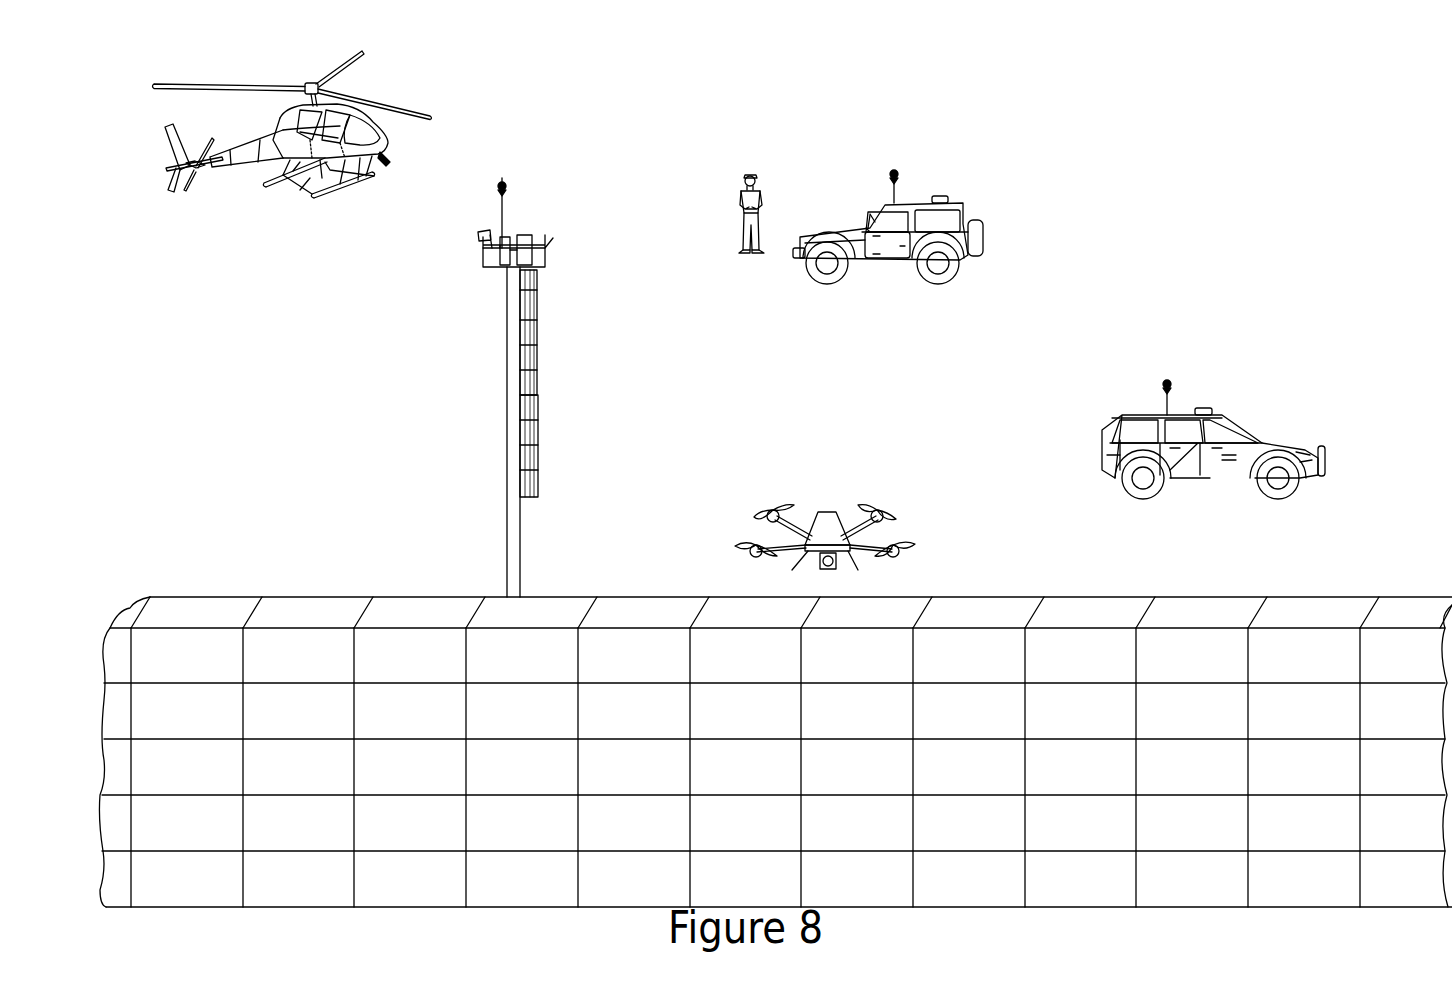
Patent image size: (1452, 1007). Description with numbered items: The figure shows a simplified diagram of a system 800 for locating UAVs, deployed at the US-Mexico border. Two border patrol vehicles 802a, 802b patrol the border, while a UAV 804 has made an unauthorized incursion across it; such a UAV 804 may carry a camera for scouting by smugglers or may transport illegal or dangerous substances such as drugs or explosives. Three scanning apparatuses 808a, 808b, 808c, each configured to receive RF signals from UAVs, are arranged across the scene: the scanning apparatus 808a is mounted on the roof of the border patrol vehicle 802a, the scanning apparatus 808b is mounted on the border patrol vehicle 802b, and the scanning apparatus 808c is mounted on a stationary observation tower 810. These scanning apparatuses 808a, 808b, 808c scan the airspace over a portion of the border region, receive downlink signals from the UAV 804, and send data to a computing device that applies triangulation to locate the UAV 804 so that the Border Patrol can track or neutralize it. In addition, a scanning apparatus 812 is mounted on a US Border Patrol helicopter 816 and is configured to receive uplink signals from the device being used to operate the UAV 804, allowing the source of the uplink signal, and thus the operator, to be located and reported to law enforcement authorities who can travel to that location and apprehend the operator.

The system for locating UAVs 800 is at (1216, 130).
The border patrol vehicle 802a is at (962, 198).
The border patrol vehicle 802b is at (1223, 410).
The UAV 804 is at (828, 511).
The scanning apparatus 808a is at (896, 170).
The scanning apparatus 808b is at (1168, 381).
The scanning apparatus 808c is at (502, 180).
The stationary observation tower 810 is at (522, 232).
The scanning apparatus 812 is at (386, 161).
The US Border Patrol helicopter 816 is at (208, 85).